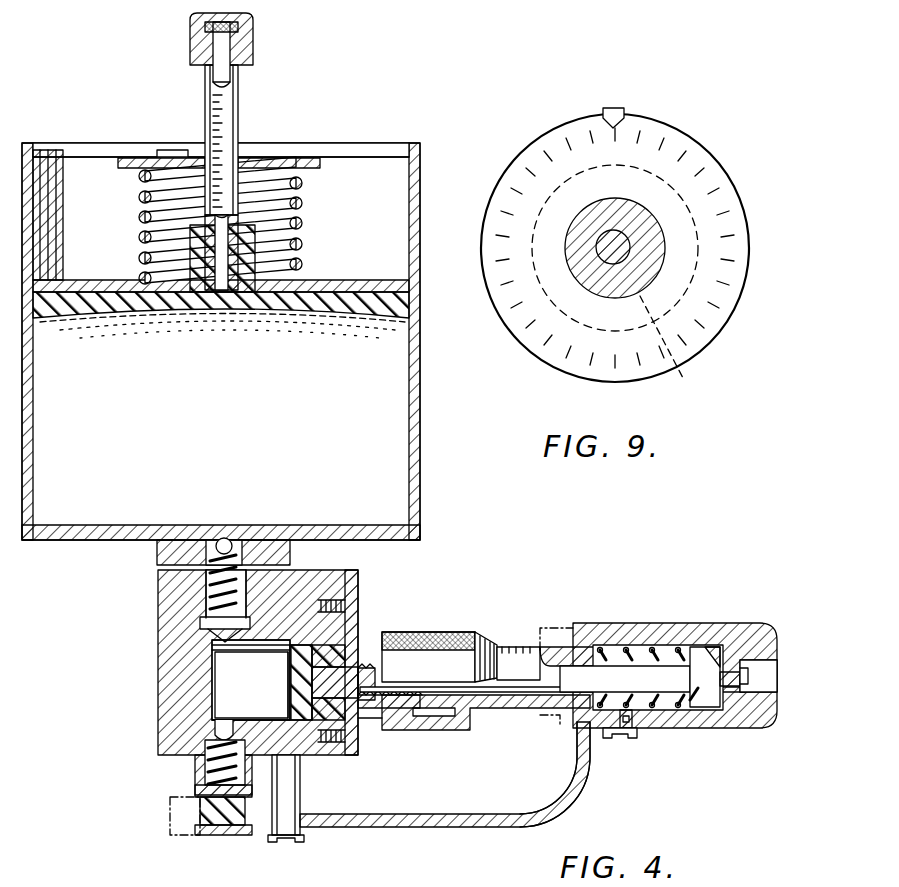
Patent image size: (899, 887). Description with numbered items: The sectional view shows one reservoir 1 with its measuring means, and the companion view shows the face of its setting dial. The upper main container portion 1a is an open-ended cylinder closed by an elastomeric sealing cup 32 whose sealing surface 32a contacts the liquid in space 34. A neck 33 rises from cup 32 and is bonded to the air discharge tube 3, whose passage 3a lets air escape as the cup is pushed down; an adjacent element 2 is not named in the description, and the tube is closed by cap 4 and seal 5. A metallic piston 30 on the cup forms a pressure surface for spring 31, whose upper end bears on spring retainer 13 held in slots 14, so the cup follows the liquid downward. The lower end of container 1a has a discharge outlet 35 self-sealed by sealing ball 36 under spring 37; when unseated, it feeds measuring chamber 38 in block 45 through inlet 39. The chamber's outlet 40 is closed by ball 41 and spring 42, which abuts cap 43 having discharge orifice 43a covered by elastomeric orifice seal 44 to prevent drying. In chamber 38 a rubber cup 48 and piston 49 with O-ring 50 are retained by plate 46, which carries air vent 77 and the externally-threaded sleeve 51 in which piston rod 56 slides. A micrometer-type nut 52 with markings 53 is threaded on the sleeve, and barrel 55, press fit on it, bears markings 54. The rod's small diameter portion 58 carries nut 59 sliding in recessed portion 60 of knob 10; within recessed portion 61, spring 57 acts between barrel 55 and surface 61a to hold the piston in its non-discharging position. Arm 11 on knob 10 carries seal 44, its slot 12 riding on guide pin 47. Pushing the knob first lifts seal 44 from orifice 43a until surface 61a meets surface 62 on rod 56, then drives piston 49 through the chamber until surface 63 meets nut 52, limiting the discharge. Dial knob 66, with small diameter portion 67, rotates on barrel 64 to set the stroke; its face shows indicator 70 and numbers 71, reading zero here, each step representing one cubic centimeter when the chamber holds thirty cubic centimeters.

In FIG. 4, the reservoir 1 is at (422, 405).
In FIG. 4, the main container portion 1a is at (403, 150).
In FIG. 4, the graduated tube 2 is at (222, 112).
In FIG. 4, the air discharge tube 3 is at (238, 133).
In FIG. 4, the passage 3a is at (218, 80).
In FIG. 4, the cap 4 is at (190, 52).
In FIG. 4, the seal 5 is at (205, 28).
In FIG. 4, the spring retainer 13 is at (312, 158).
In FIG. 4, the slots 14 is at (176, 148).
In FIG. 4, the piston 30 is at (336, 283).
In FIG. 4, the spring 31 is at (302, 205).
In FIG. 4, the elastomeric sealing cup 32 is at (405, 305).
In FIG. 4, the sealing surface 32a is at (350, 318).
In FIG. 4, the neck 33 is at (195, 275).
In FIG. 4, the space 34 is at (225, 398).
In FIG. 4, the discharge outlet 35 is at (222, 537).
In FIG. 4, the sealing ball 36 is at (230, 548).
In FIG. 4, the spring 37 is at (202, 592).
In FIG. 4, the measuring chamber 38 is at (220, 697).
In FIG. 4, the inlet 39 is at (220, 656).
In FIG. 4, the outlet 40 is at (212, 725).
In FIG. 4, the ball 41 is at (215, 738).
In FIG. 4, the spring 42 is at (205, 766).
In FIG. 4, the cap 43 is at (200, 786).
In FIG. 4, the discharge orifice 43a is at (175, 808).
In FIG. 4, the orifice seal 44 is at (172, 825).
In FIG. 4, the block 45 is at (165, 618).
In FIG. 4, the plate 46 is at (358, 576).
In FIG. 4, the guide pin 47 is at (285, 798).
In FIG. 4, the rubber cup 48 is at (282, 653).
In FIG. 4, the piston 49 is at (308, 755).
In FIG. 4, the O-ring 50 is at (362, 655).
In FIG. 4, the sleeve 51 is at (366, 716).
In FIG. 4, the micrometer-type nut 52 is at (433, 632).
In FIG. 4, the micrometer markings 53 is at (488, 642).
In FIG. 4, the micrometer markings 54 is at (518, 647).
In FIG. 4, the barrel 55 is at (547, 712).
In FIG. 4, the piston rod 56 is at (552, 678).
In FIG. 9, the piston rod 56 is at (628, 240).
In FIG. 4, the spring 57 is at (700, 645).
In FIG. 4, the small diameter portion 58 is at (717, 710).
In FIG. 4, the nut 59 is at (745, 728).
In FIG. 4, the recessed portion 60 is at (766, 680).
In FIG. 4, the recessed portion 61 is at (640, 645).
In FIG. 4, the surface 61a is at (720, 645).
In FIG. 4, the surface 62 is at (690, 708).
In FIG. 4, the surface 63 is at (568, 625).
In FIG. 4, the knob 10 is at (555, 617).
In FIG. 4, the arm 11 is at (550, 797).
In FIG. 4, the slot 12 is at (378, 822).
In FIG. 4, the air vent 77 is at (360, 722).
In FIG. 9, the barrel 64 is at (657, 290).
In FIG. 9, the dial knob 66 is at (740, 278).
In FIG. 9, the small diameter portion 67 is at (673, 348).
In FIG. 9, the indicator 70 is at (616, 107).
In FIG. 9, the numbers 71 is at (694, 160).